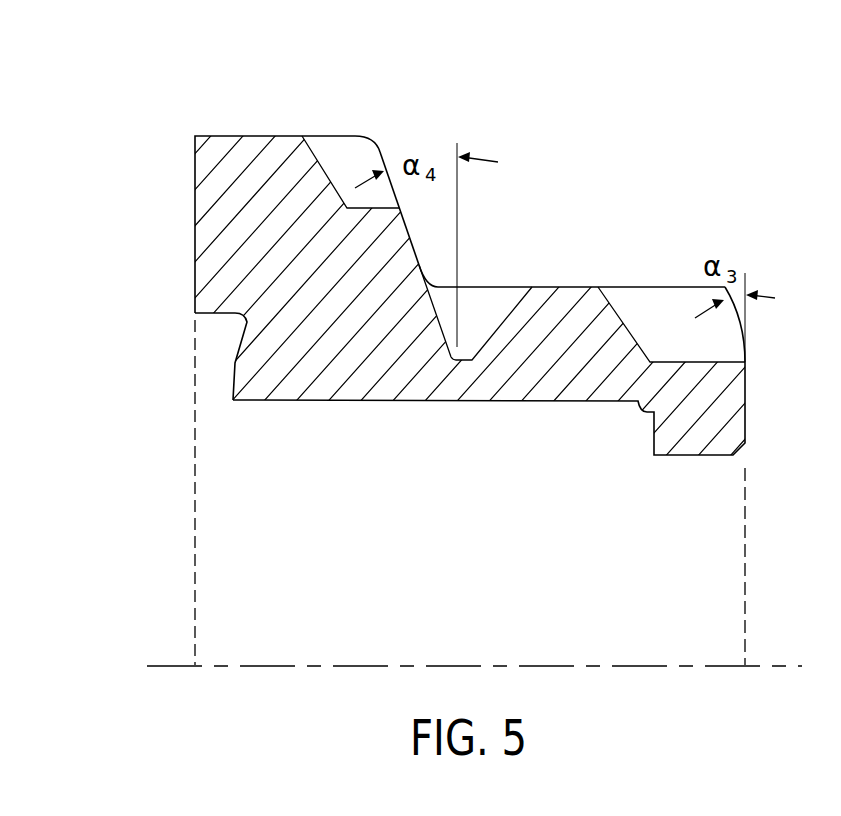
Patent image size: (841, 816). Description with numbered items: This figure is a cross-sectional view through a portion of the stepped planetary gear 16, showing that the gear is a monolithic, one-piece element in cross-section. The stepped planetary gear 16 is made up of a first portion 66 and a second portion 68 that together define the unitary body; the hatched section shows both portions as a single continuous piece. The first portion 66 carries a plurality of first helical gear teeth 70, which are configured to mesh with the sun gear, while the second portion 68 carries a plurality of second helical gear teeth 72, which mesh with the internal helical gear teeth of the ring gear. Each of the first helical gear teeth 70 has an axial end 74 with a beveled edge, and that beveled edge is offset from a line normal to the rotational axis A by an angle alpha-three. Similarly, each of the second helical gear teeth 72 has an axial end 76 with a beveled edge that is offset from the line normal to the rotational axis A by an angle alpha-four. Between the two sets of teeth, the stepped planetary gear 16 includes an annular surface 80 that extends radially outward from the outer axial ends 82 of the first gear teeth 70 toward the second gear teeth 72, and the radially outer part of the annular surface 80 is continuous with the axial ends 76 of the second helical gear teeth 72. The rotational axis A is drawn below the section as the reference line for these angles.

The stepped planetary gear 16 is at (606, 169).
The second helical gear teeth 72 is at (266, 166).
The axial end 76 is at (381, 153).
The annular surface 80 is at (424, 278).
The outer axial ends 82 is at (433, 284).
The first helical gear teeth 70 is at (560, 303).
The axial end 74 is at (710, 342).
The first portion 66 is at (549, 378).
The second portion 68 is at (297, 375).
The rotational axis A is at (166, 665).